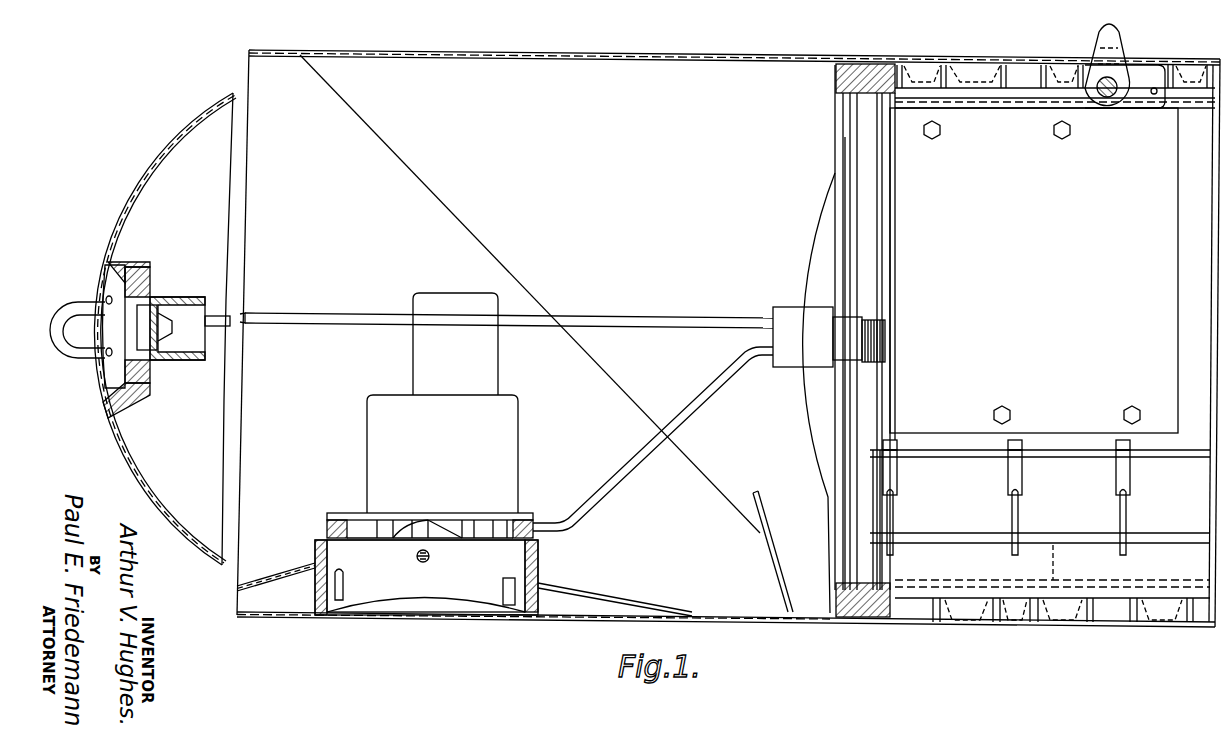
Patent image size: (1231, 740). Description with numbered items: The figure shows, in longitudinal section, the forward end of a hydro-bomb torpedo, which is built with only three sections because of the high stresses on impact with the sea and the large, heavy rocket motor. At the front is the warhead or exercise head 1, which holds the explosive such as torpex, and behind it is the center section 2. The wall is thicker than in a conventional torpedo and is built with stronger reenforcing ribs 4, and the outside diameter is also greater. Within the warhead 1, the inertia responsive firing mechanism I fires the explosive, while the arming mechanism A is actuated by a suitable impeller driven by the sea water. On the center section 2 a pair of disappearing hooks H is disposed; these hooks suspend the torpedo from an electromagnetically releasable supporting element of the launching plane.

The warhead or exercise head 1 is at (690, 58).
The center section 2 is at (986, 62).
The disappearing hooks H is at (1098, 48).
The inertia responsive firing mechanism I is at (140, 340).
The arming mechanism A is at (544, 454).
The reenforcing ribs 4 is at (940, 612).